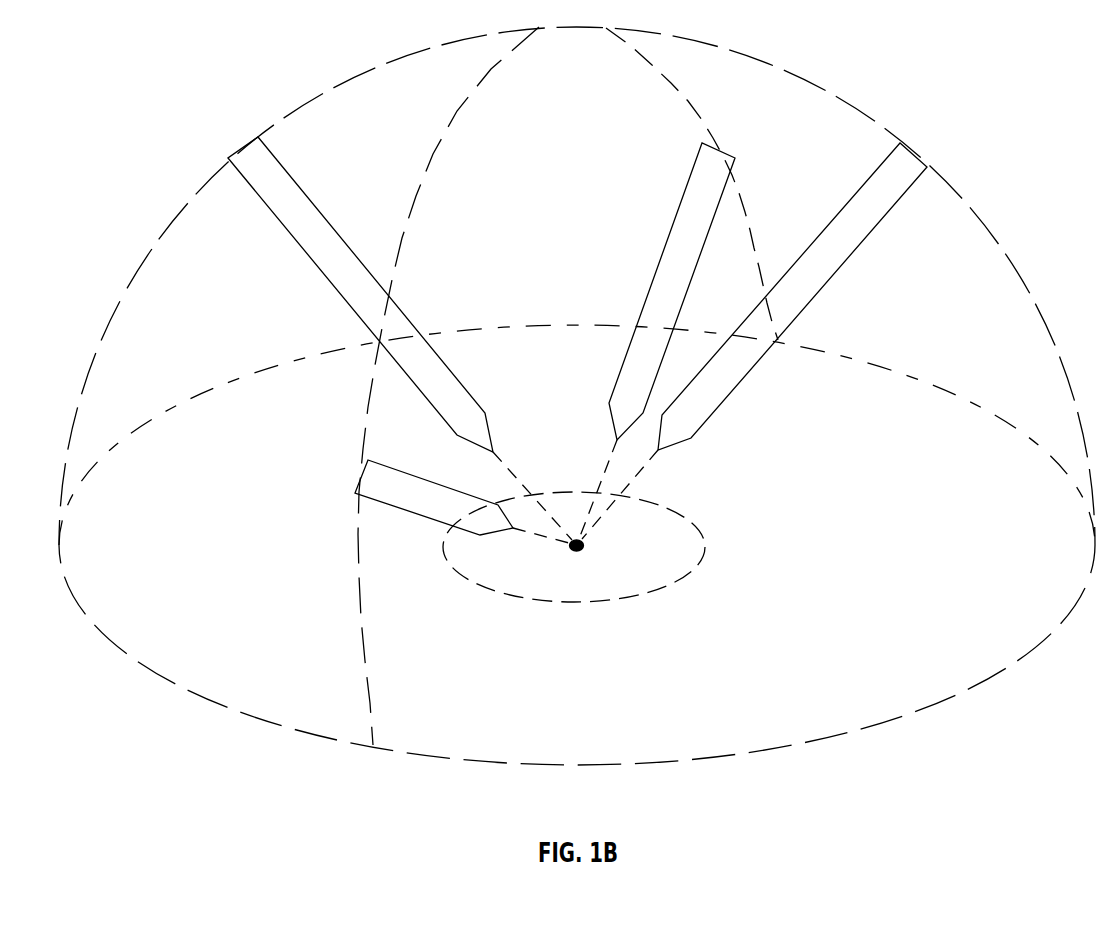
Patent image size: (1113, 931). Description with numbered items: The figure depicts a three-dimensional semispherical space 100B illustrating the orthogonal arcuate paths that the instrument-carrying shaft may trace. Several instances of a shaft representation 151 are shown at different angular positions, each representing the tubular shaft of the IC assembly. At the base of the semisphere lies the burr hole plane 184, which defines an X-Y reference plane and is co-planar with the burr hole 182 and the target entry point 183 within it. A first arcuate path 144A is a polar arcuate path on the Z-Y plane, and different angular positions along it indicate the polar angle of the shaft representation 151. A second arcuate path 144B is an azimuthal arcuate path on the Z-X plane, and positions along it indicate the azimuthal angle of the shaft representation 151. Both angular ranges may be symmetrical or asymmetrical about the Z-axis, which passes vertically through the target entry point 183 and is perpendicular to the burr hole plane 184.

The semispherical space 100B is at (577, 426).
The first arcuate path 144A is at (447, 130).
The second arcuate path 144B is at (577, 396).
The shaft representation 151 is at (307, 255).
The burr hole 182 is at (677, 580).
The target entry point 183 is at (580, 548).
The burr hole plane 184 is at (577, 435).